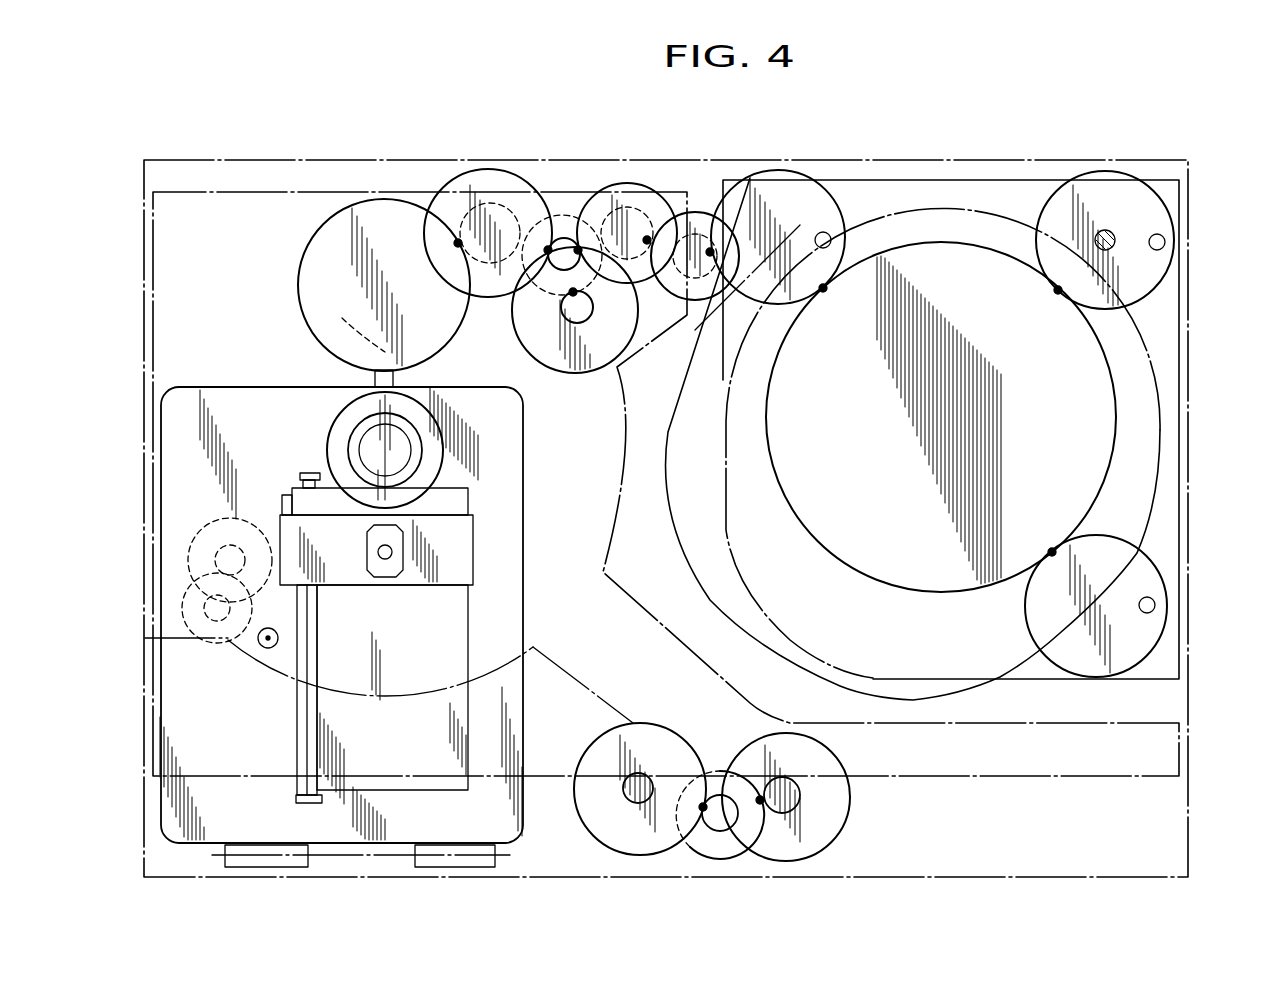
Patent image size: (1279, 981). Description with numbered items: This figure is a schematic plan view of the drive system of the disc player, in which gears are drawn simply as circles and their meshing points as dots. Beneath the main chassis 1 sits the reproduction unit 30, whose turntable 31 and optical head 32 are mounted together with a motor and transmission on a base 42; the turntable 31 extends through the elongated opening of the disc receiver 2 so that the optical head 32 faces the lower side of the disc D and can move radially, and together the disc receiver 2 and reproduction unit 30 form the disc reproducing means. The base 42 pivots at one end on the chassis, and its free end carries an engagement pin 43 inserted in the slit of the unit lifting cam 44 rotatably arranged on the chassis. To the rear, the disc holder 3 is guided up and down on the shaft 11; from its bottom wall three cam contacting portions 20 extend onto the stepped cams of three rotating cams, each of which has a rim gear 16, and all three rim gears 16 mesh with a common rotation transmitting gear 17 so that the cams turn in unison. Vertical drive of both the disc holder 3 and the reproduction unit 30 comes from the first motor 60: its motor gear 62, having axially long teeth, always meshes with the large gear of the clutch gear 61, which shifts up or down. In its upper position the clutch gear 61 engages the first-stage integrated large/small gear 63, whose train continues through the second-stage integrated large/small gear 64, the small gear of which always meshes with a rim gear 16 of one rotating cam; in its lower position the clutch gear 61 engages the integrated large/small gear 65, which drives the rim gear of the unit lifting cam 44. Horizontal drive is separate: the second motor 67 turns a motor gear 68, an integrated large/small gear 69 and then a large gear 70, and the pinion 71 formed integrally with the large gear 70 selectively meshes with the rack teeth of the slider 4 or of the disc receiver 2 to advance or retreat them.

The main chassis 1 is at (345, 160).
The disc receiver 2 is at (213, 191).
The disc holder 3 is at (957, 180).
The slider 4 is at (575, 678).
The shaft 11 is at (1108, 233).
The rim gear 16 is at (779, 171).
The rotation transmitting gear 17 is at (827, 545).
The cam contacting portion 20 is at (831, 240).
The reproduction unit 30 is at (204, 380).
The turntable 31 is at (328, 445).
The optical head 32 is at (388, 562).
The base 42 is at (268, 387).
The engagement pin 43 is at (351, 318).
The unit lifting cam 44 is at (306, 246).
The first motor 60 is at (578, 373).
The clutch gear 61 is at (563, 237).
The motor gear 62 is at (568, 317).
The first-stage integrated large/small gear 63 is at (633, 183).
The second-stage integrated large/small gear 64 is at (699, 211).
The integrated large/small gear 65 is at (490, 169).
The second motor 67 is at (838, 838).
The motor gear 68 is at (802, 795).
The integrated large/small gear 69 is at (713, 860).
The large gear 70 is at (577, 815).
The pinion 71 is at (637, 805).
The disc D is at (1170, 426).